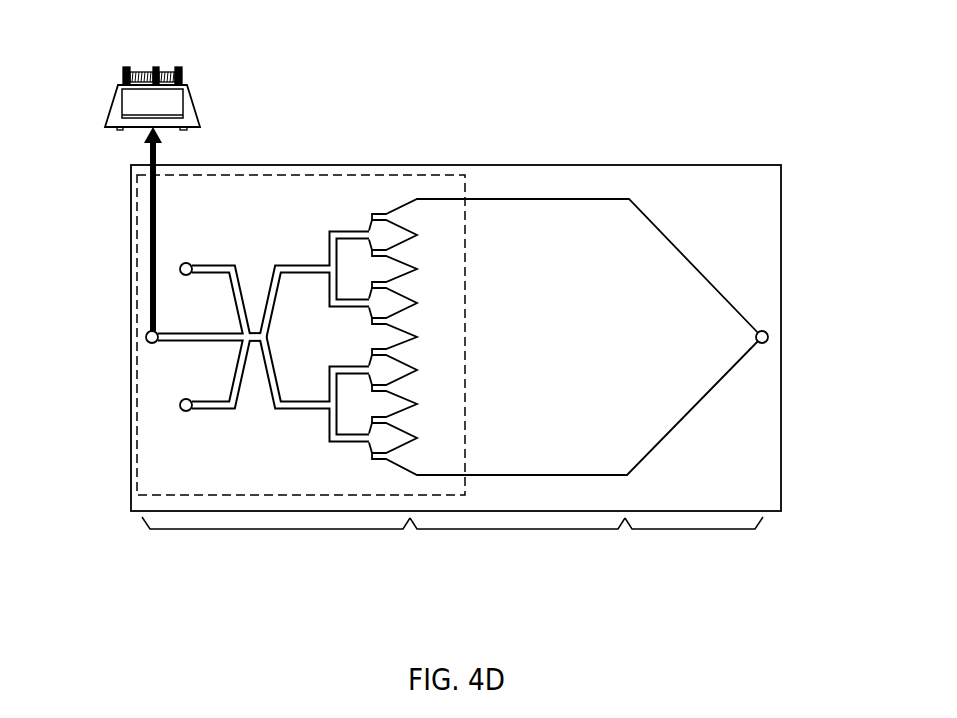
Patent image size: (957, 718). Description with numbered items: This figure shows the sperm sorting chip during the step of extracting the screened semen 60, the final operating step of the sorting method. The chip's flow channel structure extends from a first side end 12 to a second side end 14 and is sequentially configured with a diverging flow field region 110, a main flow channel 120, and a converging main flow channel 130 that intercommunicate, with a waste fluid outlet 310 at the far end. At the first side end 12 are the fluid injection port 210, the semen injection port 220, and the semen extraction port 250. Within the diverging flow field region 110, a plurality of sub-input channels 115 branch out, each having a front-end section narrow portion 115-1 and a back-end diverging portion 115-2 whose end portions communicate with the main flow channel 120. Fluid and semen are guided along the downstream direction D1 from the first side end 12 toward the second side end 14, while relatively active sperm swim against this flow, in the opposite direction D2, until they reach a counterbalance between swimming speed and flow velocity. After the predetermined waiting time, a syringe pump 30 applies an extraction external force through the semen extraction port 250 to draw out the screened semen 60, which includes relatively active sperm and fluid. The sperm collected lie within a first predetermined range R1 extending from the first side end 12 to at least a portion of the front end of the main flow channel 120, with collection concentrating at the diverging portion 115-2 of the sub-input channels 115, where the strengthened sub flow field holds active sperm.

The first side end 12 is at (83, 430).
The second side end 14 is at (850, 480).
The syringe pump 30 is at (132, 99).
The screened semen 60 is at (145, 75).
The diverging flow field region 110 is at (301, 368).
The main flow channel 120 is at (517, 540).
The converging main flow channel 130 is at (694, 540).
The sub-input channels 115 is at (418, 259).
The front-end section narrow portion 115-1 is at (368, 217).
The back-end diverging portion 115-2 is at (396, 212).
The fluid injection port 210 is at (187, 262).
The semen injection port 220 is at (180, 406).
The semen extraction port 250 is at (146, 337).
The waste fluid outlet 310 is at (768, 337).
The first predetermined range R1 is at (464, 193).
The downstream direction D1 is at (851, 627).
The second direction D2 is at (737, 627).